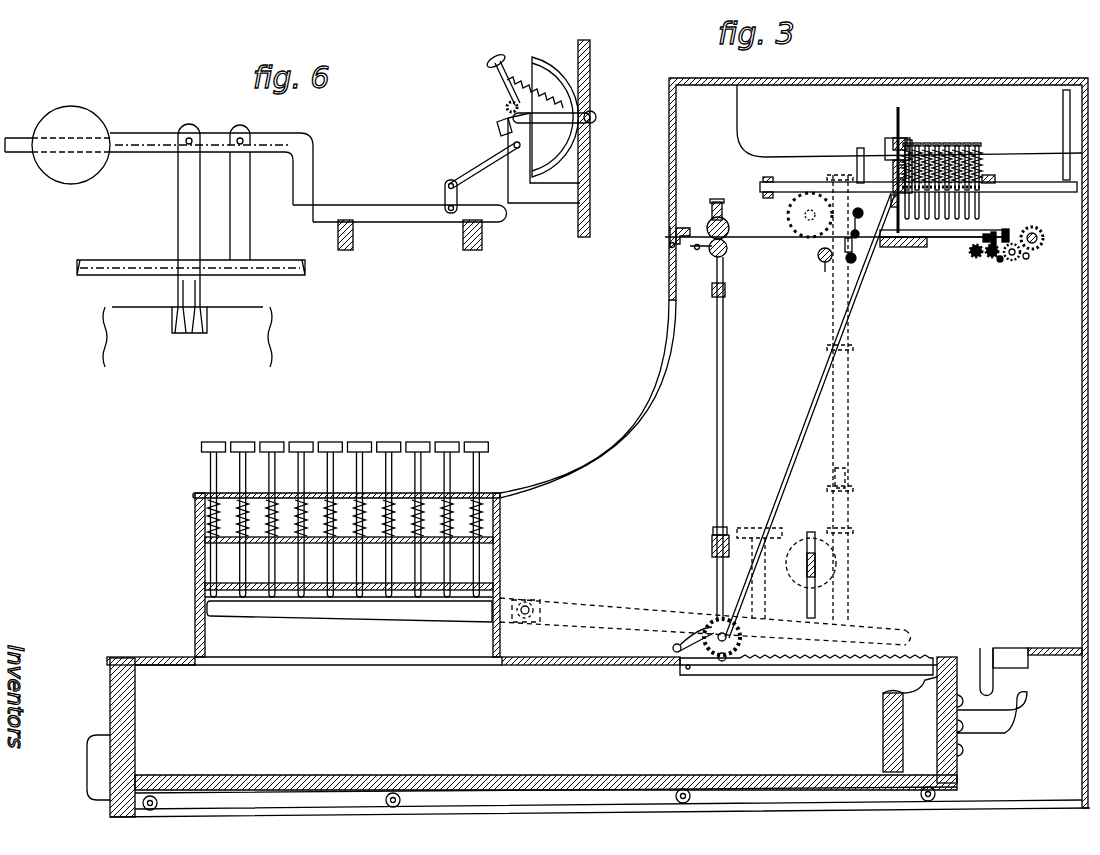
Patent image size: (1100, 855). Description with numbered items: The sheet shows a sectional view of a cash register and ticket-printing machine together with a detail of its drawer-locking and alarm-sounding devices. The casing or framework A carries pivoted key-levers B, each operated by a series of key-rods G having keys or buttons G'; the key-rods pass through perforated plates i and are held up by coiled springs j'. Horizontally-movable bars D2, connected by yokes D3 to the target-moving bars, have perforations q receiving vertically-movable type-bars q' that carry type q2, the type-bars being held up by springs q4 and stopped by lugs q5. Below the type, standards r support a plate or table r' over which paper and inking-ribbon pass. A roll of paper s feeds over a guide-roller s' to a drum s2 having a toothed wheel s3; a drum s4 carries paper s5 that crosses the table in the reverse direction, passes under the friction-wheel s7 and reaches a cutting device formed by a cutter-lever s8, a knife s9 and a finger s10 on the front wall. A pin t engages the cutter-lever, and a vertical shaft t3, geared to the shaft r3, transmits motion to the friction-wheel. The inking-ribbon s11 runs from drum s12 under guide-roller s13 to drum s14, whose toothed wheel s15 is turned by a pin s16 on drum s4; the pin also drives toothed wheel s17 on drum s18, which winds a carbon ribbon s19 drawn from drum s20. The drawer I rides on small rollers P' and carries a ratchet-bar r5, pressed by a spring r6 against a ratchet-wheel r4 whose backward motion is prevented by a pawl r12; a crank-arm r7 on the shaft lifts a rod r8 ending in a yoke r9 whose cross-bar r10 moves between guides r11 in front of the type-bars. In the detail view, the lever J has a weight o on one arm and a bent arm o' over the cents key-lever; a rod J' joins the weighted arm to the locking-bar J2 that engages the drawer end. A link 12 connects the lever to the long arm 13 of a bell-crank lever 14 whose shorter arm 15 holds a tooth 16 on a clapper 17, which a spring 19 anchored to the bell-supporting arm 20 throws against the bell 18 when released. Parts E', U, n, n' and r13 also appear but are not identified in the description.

In FIG. 6, the weight o is at (57, 145).
In FIG. 6, the lever J is at (211, 188).
In FIG. 3, the lever J is at (809, 575).
In FIG. 6, the rod J' is at (173, 226).
In FIG. 6, the locking-bar J2 is at (190, 325).
In FIG. 6, the drawer I is at (187, 337).
In FIG. 3, the drawer I is at (588, 732).
In FIG. 6, the arm of lever J o' is at (400, 203).
In FIG. 6, the key-lever B is at (418, 235).
In FIG. 3, the key-lever B is at (468, 612).
In FIG. 6, the link 12 is at (445, 192).
In FIG. 6, the long arm 13 is at (472, 172).
In FIG. 6, the bell-crank lever 14 is at (506, 148).
In FIG. 6, the shorter arm 15 is at (497, 127).
In FIG. 6, the tooth 16 is at (506, 108).
In FIG. 6, the clapper 17 is at (500, 75).
In FIG. 6, the bell 18 is at (544, 58).
In FIG. 6, the spring 19 is at (535, 91).
In FIG. 6, the arm 20 is at (545, 122).
In FIG. 6, the casing or framework A is at (592, 138).
In FIG. 3, the casing or framework A is at (629, 443).
In FIG. 3, the key-rod G is at (328, 512).
In FIG. 3, the key or button G' is at (454, 512).
In FIG. 3, the coiled spring j' is at (345, 518).
In FIG. 3, the perforated plate i is at (349, 567).
In FIG. 3, the horizontally-movable bar D2 is at (800, 182).
In FIG. 3, the yoke D3 is at (857, 154).
In FIG. 3, the vertical rod E' is at (880, 165).
In FIG. 3, the cross-bar r10 is at (886, 145).
In FIG. 3, the cap r13 is at (905, 140).
In FIG. 3, the guide r11 is at (912, 150).
In FIG. 3, the spring q4 is at (985, 160).
In FIG. 3, the perforation q is at (965, 175).
In FIG. 3, the type-bar q' is at (955, 205).
In FIG. 3, the type q2 is at (905, 230).
In FIG. 3, the plate or table r' is at (903, 251).
In FIG. 3, the lug or ear q5 is at (896, 180).
In FIG. 3, the paper s5 is at (793, 236).
In FIG. 3, the pin t is at (735, 240).
In FIG. 3, the post U is at (723, 210).
In FIG. 3, the friction-wheel s7 is at (729, 228).
In FIG. 3, the drum s4 is at (727, 252).
In FIG. 3, the arm or finger s10 is at (674, 233).
In FIG. 3, the cutter or knife s9 is at (670, 246).
In FIG. 3, the cutter-lever s8 is at (698, 250).
In FIG. 3, the vertical shaft t3 is at (724, 347).
In FIG. 3, the drum s12 is at (863, 212).
In FIG. 3, the inking-ribbon s11 is at (865, 224).
In FIG. 3, the guide-roller s' is at (854, 245).
In FIG. 3, the roll of paper s is at (849, 266).
In FIG. 3, the drum s20 is at (821, 262).
In FIG. 3, the yoke r9 is at (876, 256).
In FIG. 3, the rod r8 is at (808, 440).
In FIG. 3, the toothed wheel s15 is at (1038, 227).
In FIG. 3, the drum s14 is at (1044, 240).
In FIG. 3, the pin s16 is at (1030, 256).
In FIG. 3, the toothed wheel s3 is at (973, 258).
In FIG. 3, the drum s2 is at (990, 258).
In FIG. 3, the drum s18 is at (998, 262).
In FIG. 3, the toothed wheel s17 is at (1003, 264).
In FIG. 3, the guide-roller s13 is at (1005, 228).
In FIG. 3, the carbon ribbon s19 is at (984, 237).
In FIG. 3, the standard r is at (818, 397).
In FIG. 3, the pawl r12 is at (712, 620).
In FIG. 3, the shaft r3 is at (673, 645).
In FIG. 3, the ratchet-wheel r4 is at (748, 640).
In FIG. 3, the ratchet-bar r5 is at (815, 672).
In FIG. 3, the crank-arm r7 is at (720, 661).
In FIG. 3, the spring r6 is at (908, 694).
In FIG. 3, the rod n' is at (1004, 672).
In FIG. 3, the hook n is at (1002, 723).
In FIG. 3, the rollers P' is at (565, 778).